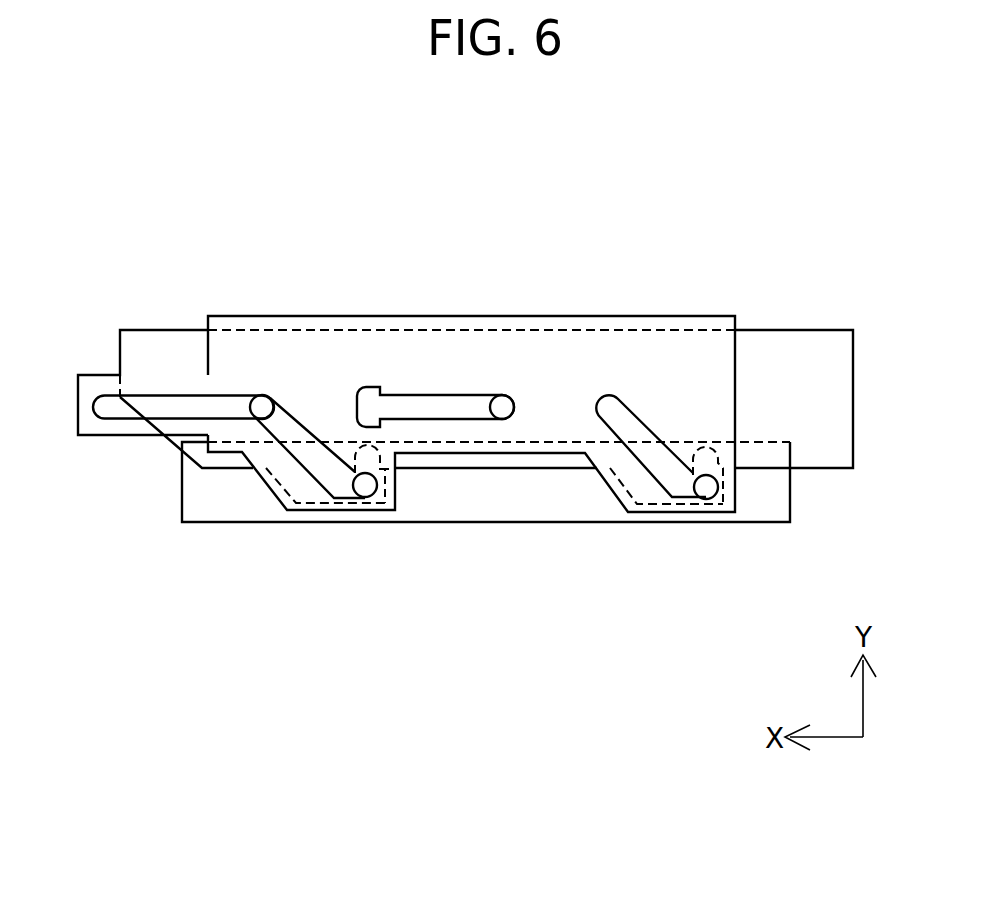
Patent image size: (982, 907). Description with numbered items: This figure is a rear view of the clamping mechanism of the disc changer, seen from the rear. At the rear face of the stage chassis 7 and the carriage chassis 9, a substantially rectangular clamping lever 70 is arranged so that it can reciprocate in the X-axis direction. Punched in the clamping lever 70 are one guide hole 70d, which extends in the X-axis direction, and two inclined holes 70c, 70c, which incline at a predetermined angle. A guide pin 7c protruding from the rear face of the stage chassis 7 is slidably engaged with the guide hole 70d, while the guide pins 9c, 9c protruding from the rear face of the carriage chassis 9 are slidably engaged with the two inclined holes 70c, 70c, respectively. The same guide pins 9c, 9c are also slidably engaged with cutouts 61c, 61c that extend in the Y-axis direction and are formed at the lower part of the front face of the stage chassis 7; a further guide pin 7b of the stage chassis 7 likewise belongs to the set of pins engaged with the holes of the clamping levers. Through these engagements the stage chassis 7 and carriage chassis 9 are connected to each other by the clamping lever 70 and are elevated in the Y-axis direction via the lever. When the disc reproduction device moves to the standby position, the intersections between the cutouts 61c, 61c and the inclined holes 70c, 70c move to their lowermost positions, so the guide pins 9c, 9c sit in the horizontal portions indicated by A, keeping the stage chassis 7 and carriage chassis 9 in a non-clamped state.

The stage chassis 7 is at (779, 342).
The guide pin 7b is at (260, 421).
The guide pin 7c is at (500, 404).
The carriage chassis 9 is at (828, 457).
The guide pin 9c is at (364, 497).
The cutout 61c is at (396, 490).
The clamping lever 70 is at (587, 320).
The inclined hole 70c is at (318, 452).
The guide hole 70d is at (430, 395).
The horizontal portion A is at (351, 488).